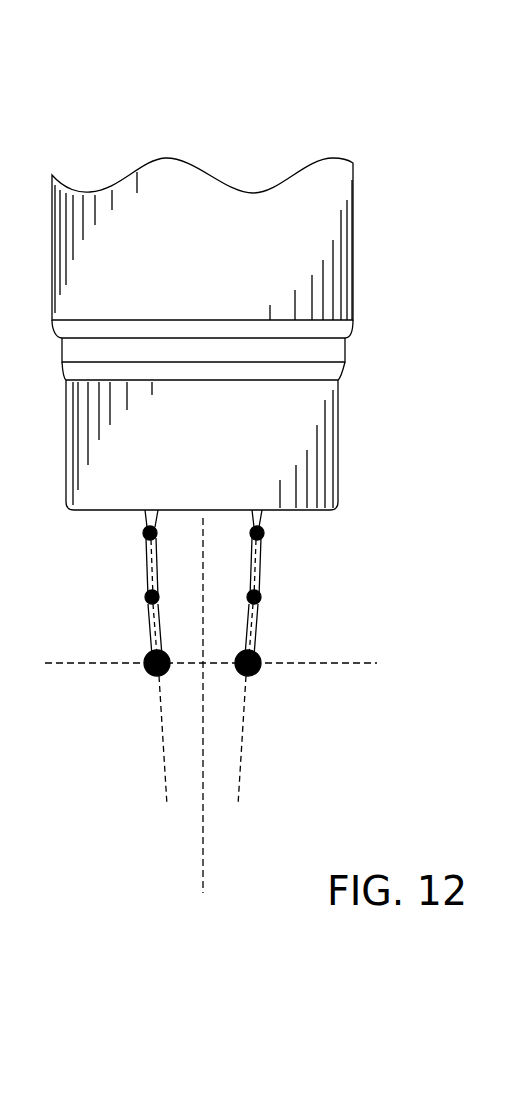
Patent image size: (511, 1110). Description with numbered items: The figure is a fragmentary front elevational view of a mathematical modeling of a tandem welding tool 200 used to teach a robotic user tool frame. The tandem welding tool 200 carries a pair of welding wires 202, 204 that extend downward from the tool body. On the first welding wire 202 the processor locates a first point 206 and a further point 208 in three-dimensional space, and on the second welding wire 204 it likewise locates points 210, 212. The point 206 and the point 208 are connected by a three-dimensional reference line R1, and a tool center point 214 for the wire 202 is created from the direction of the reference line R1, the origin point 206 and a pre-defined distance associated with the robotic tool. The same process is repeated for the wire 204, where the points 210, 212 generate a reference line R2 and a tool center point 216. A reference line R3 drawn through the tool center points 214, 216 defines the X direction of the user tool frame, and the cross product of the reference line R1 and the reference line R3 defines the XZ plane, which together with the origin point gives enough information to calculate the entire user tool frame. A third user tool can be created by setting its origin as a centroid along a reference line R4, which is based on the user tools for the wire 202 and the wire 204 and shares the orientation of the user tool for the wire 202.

The tandem welding tool 200 is at (112, 98).
The welding wire 202 is at (146, 512).
The welding wire 204 is at (260, 512).
The first point 206 is at (146, 538).
The point 208 is at (146, 597).
The point 210 is at (262, 538).
The point 212 is at (261, 597).
The tool center point 214 is at (147, 671).
The tool center point 216 is at (259, 671).
The reference line R1 is at (165, 760).
The reference line R2 is at (240, 780).
The reference line R3 is at (377, 663).
The reference line R4 is at (204, 865).